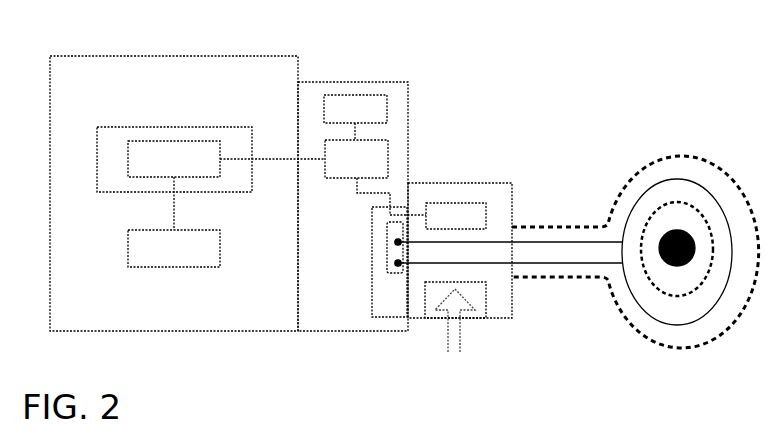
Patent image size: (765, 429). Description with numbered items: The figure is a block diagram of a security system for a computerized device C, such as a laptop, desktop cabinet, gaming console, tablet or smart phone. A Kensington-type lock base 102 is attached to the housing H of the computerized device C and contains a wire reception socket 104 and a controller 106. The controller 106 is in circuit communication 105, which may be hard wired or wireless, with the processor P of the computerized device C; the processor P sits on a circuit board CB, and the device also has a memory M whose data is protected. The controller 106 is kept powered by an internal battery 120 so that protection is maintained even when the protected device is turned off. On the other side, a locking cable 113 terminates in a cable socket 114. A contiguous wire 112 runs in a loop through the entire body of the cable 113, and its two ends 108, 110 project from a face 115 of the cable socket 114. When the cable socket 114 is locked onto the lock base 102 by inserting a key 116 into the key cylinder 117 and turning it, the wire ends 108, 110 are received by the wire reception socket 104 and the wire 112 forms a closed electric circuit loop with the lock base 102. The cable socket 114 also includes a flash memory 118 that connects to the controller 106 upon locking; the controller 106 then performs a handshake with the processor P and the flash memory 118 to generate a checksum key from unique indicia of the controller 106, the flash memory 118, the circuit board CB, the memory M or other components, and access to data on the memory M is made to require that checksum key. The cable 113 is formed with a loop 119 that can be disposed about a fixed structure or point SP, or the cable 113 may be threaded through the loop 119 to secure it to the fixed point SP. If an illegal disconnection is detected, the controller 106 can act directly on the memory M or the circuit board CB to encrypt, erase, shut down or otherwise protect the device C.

The computerized device C is at (115, 50).
The housing H is at (200, 55).
The circuit board CB is at (173, 127).
The processor P is at (128, 158).
The memory M is at (173, 267).
The circuit communication 105 is at (276, 159).
The lock base 102 is at (353, 82).
The internal battery 120 is at (387, 110).
The controller 106 is at (388, 158).
The cable socket 114 is at (460, 183).
The flash memory 118 is at (470, 203).
The wire reception socket 104 is at (392, 273).
The face 115 is at (398, 295).
The first wire end 108 is at (395, 242).
The second wire end 110 is at (395, 263).
The key cylinder 117 is at (425, 300).
The key 116 is at (448, 352).
The contiguous wire 112 is at (568, 263).
The locking cable 113 is at (640, 333).
The loop 119 is at (635, 250).
The fixed point SP is at (673, 267).